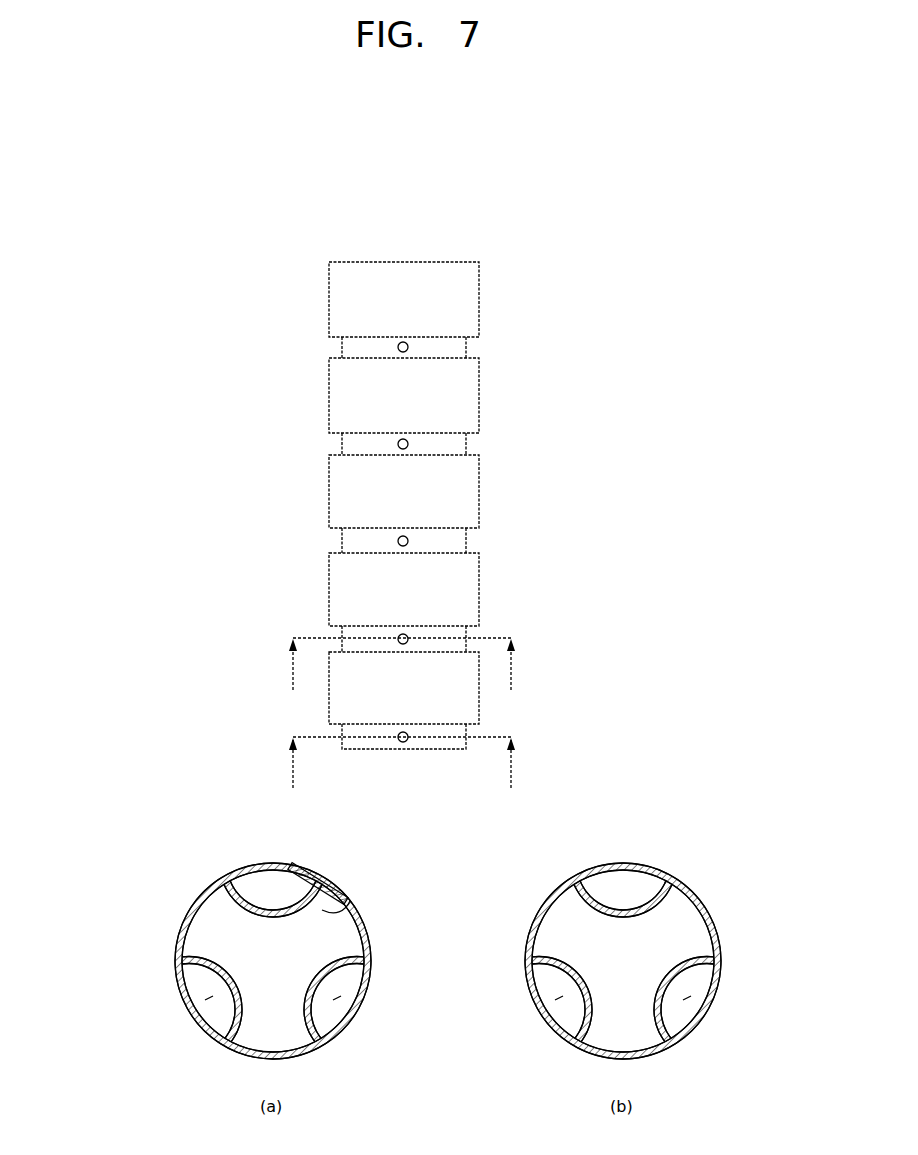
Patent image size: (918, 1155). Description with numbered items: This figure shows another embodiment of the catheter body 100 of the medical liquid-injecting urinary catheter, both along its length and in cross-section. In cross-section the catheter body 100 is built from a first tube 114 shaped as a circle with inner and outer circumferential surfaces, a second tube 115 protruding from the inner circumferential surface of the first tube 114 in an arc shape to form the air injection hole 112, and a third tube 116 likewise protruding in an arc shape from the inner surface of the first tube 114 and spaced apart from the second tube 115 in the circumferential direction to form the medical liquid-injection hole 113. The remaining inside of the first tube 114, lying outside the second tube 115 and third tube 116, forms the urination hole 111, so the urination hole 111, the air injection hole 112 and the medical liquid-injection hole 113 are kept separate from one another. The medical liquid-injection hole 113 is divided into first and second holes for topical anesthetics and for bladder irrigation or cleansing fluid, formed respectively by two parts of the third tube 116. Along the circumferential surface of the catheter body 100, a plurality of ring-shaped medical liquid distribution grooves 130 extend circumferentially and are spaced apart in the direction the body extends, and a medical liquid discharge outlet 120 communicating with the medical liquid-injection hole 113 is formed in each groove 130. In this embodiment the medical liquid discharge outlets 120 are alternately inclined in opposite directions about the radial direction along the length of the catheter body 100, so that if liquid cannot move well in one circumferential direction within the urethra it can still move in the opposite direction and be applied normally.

The catheter body 100 is at (410, 944).
The urination hole 111 is at (271, 958).
The air injection hole 112 is at (352, 1013).
The medical liquid-injection hole 113 is at (312, 862).
The first tube 114 is at (364, 913).
The second tube 115 is at (354, 1000).
The third tube 116 is at (323, 907).
The medical liquid discharge outlet 120 is at (406, 540).
The ring-shaped medical liquid distribution groove 130 is at (431, 447).